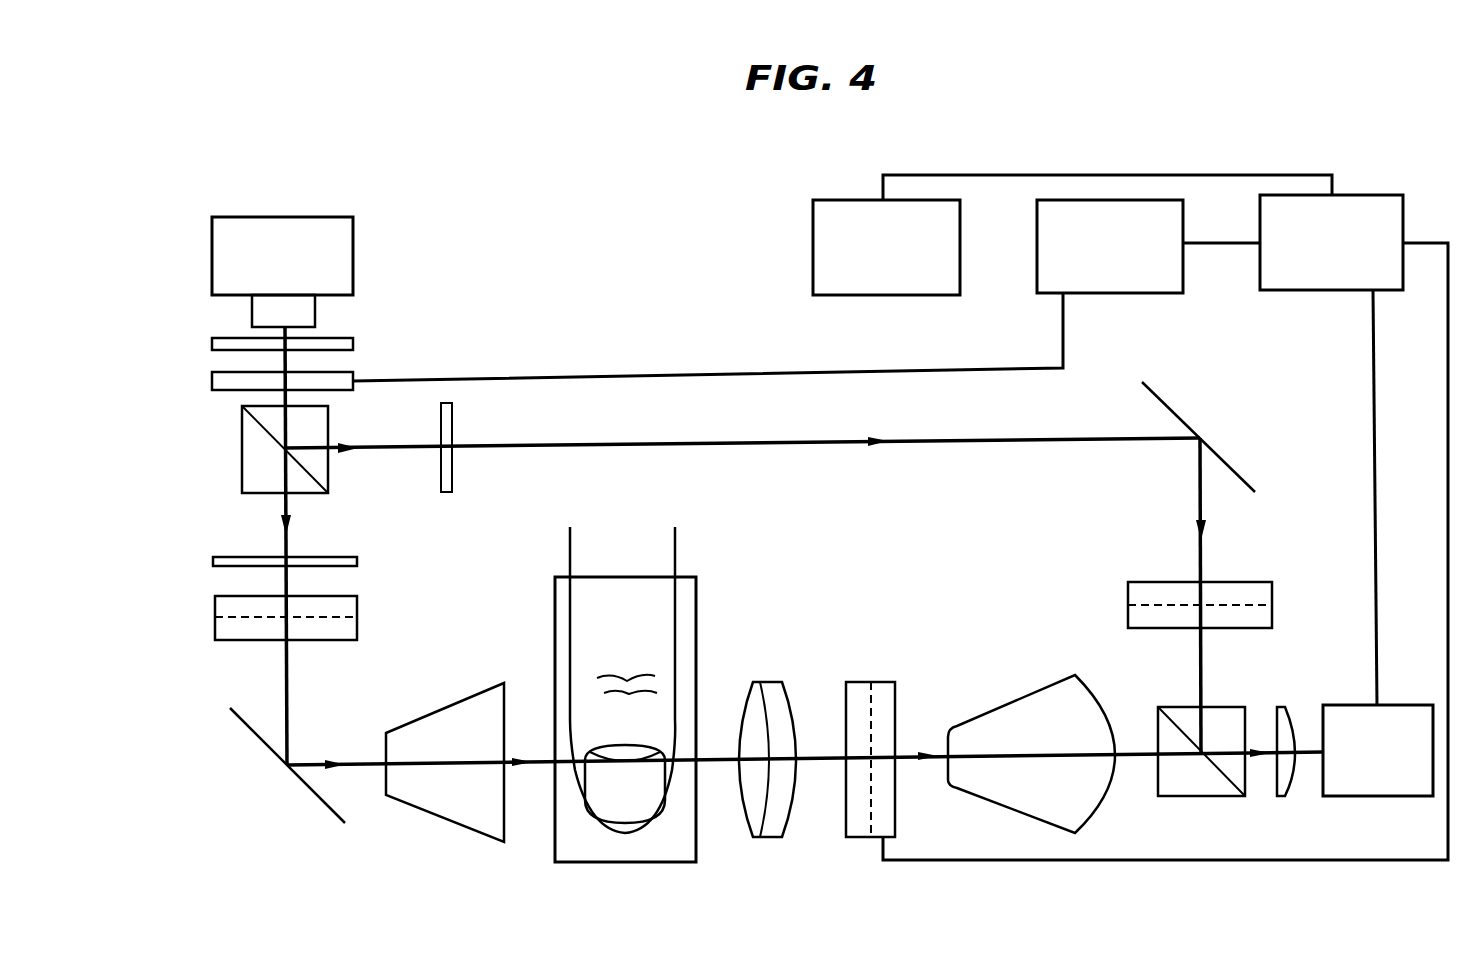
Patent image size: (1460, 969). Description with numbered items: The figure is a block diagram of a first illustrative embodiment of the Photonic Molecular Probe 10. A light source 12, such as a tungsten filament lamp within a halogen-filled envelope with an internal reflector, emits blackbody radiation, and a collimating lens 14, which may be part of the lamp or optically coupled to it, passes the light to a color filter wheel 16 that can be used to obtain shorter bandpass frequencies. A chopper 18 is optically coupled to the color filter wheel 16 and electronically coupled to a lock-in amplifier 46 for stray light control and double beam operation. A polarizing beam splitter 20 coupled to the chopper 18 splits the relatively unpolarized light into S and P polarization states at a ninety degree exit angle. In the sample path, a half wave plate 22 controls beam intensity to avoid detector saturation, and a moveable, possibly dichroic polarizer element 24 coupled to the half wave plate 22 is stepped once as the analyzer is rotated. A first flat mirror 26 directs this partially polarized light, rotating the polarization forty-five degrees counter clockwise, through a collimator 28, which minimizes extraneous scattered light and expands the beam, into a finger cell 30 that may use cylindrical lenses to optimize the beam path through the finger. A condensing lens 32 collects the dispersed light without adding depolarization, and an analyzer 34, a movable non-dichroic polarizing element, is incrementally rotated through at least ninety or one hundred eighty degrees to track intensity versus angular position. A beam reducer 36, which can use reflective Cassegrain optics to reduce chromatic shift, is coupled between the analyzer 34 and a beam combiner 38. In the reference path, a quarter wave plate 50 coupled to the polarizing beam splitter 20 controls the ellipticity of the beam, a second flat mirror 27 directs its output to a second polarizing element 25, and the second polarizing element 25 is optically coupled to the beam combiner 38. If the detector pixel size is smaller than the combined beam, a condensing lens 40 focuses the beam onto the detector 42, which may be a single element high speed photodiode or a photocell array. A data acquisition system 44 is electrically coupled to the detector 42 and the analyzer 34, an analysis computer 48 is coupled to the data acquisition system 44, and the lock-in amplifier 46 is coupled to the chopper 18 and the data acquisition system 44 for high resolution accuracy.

The Photonic Molecular Probe 10 is at (515, 178).
The light source 12 is at (353, 238).
The collimating lens 14 is at (315, 313).
The color filter wheel 16 is at (212, 344).
The chopper 18 is at (212, 382).
The polarizing beam splitter 20 is at (242, 438).
The half wave plate 22 is at (240, 557).
The polarizer element 24 is at (215, 612).
The second polarizing element 25 is at (1250, 582).
The first flat mirror 26 is at (320, 800).
The second flat mirror 27 is at (1226, 462).
The collimator 28 is at (462, 700).
The finger cell 30 is at (668, 862).
The condensing lens 32 is at (764, 682).
The analyzer 34 is at (880, 682).
The beam reducer 36 is at (995, 710).
The beam combiner 38 is at (1185, 707).
The condensing lens 40 is at (1288, 707).
The detector 42 is at (1403, 705).
The data acquisition system 44 is at (1385, 195).
The lock-in amplifier 46 is at (1172, 293).
The analysis computer 48 is at (813, 241).
The quarter wave plate 50 is at (452, 418).